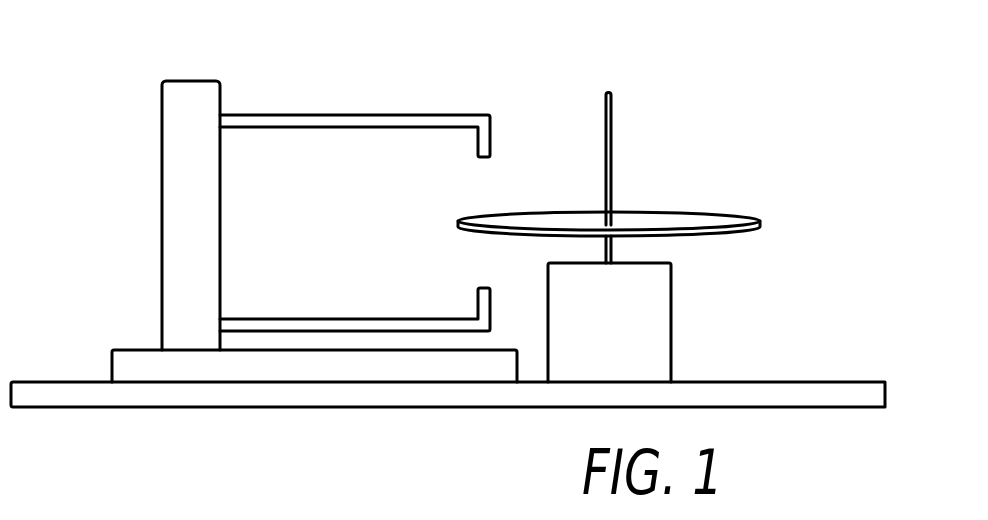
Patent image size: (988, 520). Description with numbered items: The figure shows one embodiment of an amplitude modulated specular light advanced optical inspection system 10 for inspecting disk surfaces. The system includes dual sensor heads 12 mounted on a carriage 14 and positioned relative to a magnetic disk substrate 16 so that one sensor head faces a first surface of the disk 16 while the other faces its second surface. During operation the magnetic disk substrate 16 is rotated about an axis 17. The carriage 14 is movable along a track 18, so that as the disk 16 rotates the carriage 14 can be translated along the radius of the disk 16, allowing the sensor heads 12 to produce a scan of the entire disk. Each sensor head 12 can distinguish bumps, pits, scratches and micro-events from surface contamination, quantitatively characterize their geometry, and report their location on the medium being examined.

The amplitude modulated specular light advanced optical inspection system 10 is at (782, 83).
The dual sensor heads 12 is at (380, 113).
The carriage 14 is at (132, 352).
The magnetic disk substrate 16 is at (720, 217).
The axis 17 is at (612, 112).
The track 18 is at (803, 382).